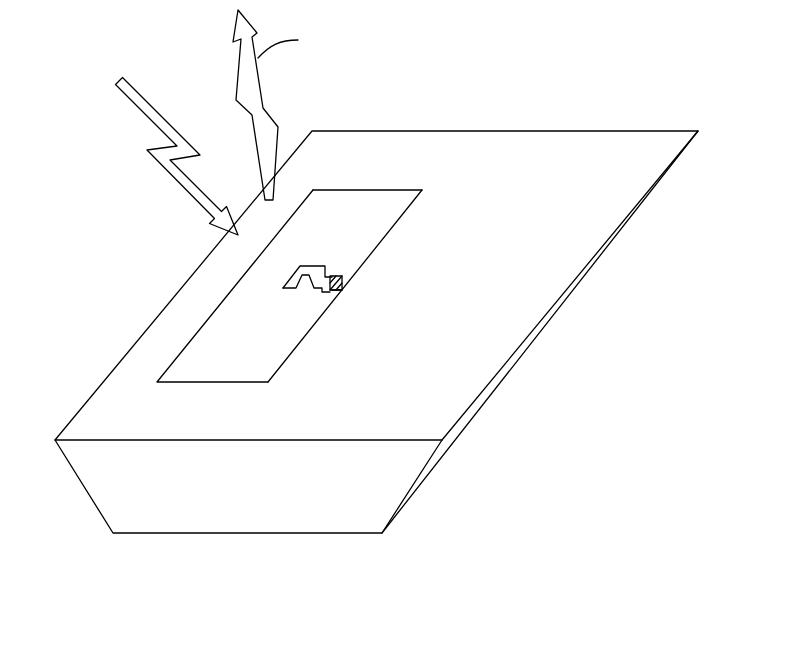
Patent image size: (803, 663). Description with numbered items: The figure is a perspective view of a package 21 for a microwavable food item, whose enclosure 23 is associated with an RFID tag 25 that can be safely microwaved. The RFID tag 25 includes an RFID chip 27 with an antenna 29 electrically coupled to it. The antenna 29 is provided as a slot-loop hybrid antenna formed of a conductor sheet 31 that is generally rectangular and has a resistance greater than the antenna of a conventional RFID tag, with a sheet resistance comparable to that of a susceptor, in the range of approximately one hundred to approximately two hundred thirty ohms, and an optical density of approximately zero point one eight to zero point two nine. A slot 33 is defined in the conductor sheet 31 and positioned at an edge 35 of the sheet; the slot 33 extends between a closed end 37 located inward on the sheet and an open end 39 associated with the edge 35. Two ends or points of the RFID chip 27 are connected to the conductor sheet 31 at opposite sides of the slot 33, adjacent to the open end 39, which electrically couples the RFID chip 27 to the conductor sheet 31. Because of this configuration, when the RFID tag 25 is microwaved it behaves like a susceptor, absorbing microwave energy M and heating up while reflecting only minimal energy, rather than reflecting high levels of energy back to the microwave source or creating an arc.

The package 21 is at (529, 53).
The enclosure 23 is at (420, 410).
The RFID tag 25 is at (439, 177).
The RFID chip 27 is at (340, 275).
The antenna 29 is at (357, 179).
The conductor sheet 31 is at (223, 365).
The slot 33 is at (312, 265).
The edge 35 is at (378, 245).
The closed end 37 is at (283, 288).
The open end 39 is at (343, 284).
The microwave energy M is at (180, 187).